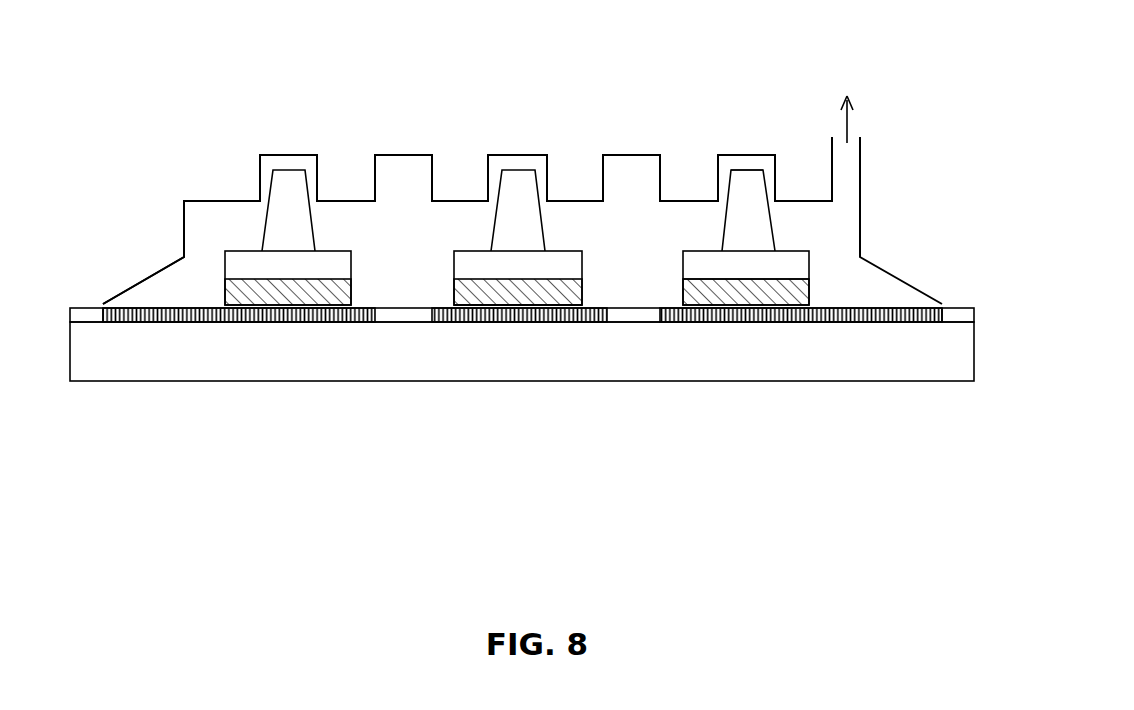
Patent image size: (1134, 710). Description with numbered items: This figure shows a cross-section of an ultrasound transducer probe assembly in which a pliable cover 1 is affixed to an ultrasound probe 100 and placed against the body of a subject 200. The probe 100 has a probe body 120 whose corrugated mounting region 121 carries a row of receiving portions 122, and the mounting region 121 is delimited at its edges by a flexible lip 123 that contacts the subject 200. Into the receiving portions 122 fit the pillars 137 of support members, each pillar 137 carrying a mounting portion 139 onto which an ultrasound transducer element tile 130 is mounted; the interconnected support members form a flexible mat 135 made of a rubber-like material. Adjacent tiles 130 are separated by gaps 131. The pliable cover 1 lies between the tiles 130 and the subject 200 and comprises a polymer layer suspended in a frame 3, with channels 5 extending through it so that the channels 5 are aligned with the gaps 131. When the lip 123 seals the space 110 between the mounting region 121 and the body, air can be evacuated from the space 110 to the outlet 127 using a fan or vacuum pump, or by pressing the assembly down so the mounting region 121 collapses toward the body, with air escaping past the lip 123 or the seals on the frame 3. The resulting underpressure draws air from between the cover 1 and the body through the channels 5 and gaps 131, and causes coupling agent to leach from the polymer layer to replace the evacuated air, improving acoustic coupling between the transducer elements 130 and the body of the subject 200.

The ultrasound probe 100 is at (222, 169).
The space 110 is at (440, 235).
The probe body 120 is at (860, 148).
The mounting region 121 is at (287, 157).
The receiving portions 122 is at (632, 168).
The flexible lip 123 is at (141, 280).
The outlet 127 is at (847, 104).
The ultrasound transducer element tiles 130 is at (758, 293).
The gaps 131 is at (607, 290).
The flexible mat 135 is at (745, 175).
The pillar 137 is at (752, 222).
The mounting portion 139 is at (790, 272).
The subject 200 is at (588, 365).
The pliable cover 1 is at (178, 317).
The frame 3 is at (90, 315).
The channels 5 is at (403, 318).